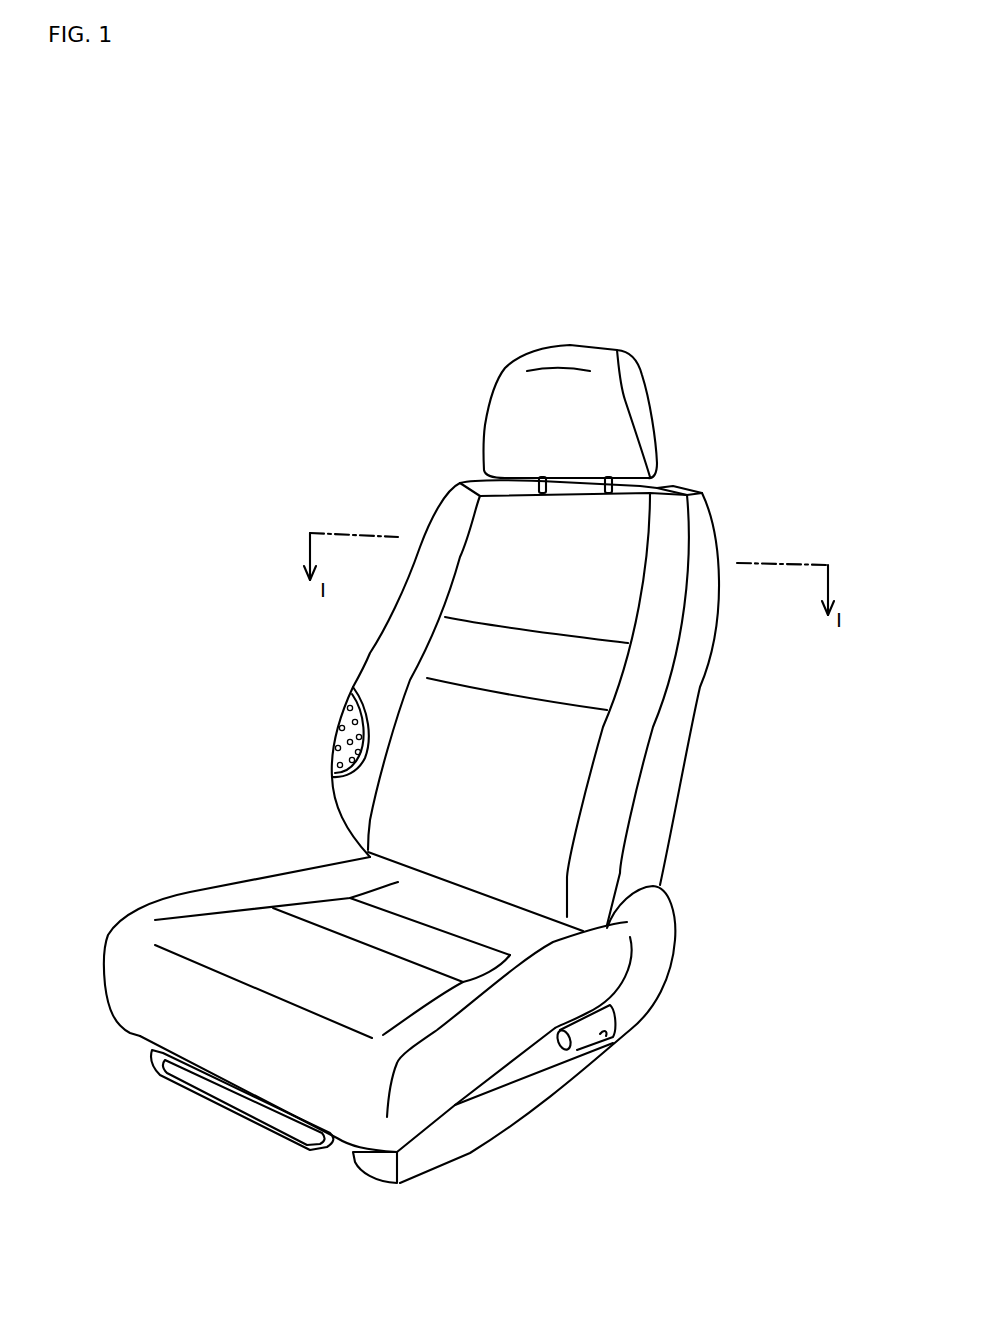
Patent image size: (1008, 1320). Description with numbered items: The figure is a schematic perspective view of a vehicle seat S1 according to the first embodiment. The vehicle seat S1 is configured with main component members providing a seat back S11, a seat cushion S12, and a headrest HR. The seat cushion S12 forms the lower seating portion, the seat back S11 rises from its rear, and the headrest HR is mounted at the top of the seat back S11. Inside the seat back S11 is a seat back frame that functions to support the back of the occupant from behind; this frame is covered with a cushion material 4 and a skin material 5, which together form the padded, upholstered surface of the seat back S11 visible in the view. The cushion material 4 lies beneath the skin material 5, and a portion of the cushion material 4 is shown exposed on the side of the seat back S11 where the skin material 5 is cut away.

The vehicle seat S1 is at (205, 290).
The headrest HR is at (532, 342).
The seat back S11 is at (315, 487).
The seat cushion S12 is at (243, 863).
The side portion of seat back 5 is at (373, 668).
The speaker (perforated grille portion) 4 is at (333, 732).